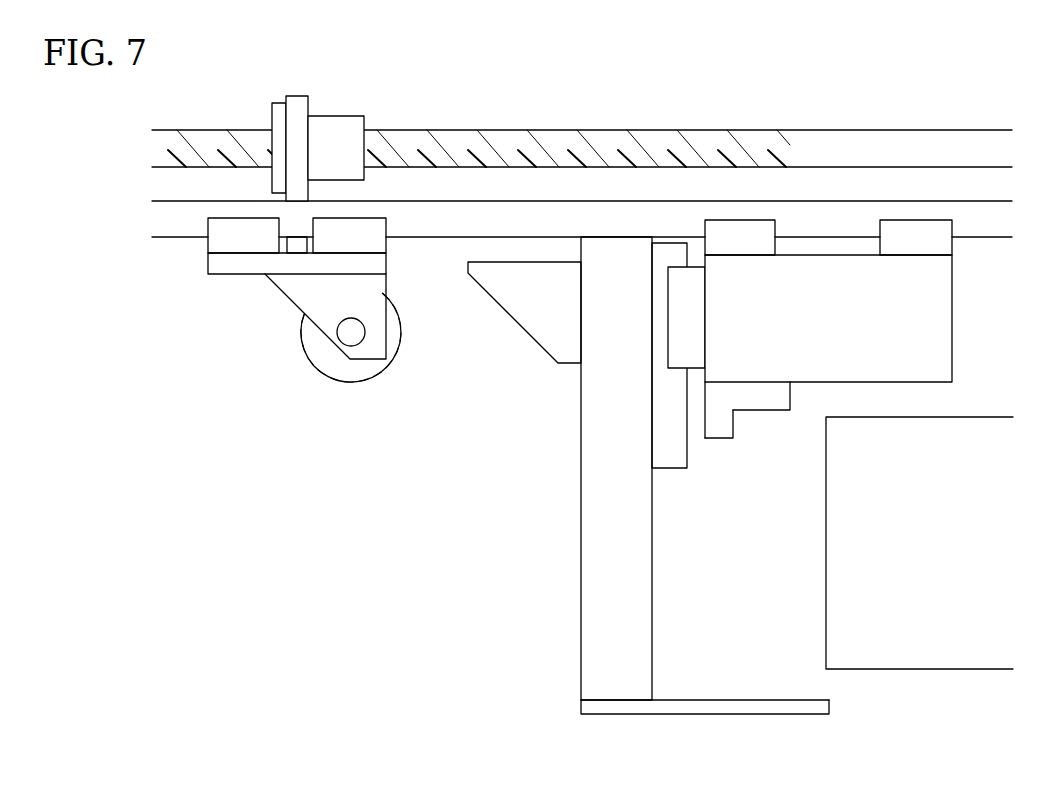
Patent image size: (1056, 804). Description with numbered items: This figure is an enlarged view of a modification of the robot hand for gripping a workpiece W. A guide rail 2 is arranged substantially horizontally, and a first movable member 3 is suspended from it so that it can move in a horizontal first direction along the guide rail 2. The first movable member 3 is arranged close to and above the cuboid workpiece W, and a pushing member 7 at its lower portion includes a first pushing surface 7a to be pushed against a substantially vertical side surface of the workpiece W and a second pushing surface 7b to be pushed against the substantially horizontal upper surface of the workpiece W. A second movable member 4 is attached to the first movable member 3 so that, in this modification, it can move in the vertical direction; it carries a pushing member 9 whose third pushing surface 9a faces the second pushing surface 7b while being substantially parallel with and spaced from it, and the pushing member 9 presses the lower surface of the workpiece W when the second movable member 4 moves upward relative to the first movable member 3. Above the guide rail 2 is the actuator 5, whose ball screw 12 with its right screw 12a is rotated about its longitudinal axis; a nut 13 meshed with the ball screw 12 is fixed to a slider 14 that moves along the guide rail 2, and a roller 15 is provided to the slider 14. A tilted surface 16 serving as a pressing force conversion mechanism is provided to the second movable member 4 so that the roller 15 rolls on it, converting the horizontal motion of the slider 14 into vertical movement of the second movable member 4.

The guide rail 2 is at (853, 201).
The first movable member 3 is at (970, 323).
The second movable member 4 is at (565, 597).
The actuator 5 is at (233, 371).
The pushing member 7 is at (704, 452).
The first pushing surface 7a is at (737, 416).
The second pushing surface 7b is at (768, 412).
The pushing member 9 is at (688, 732).
The third pushing surface 9a is at (755, 700).
The ball screw 12 is at (609, 113).
The right screw 12a is at (445, 130).
The nut 13 is at (325, 116).
The slider 14 is at (230, 276).
The roller 15 is at (308, 360).
The tilted surface 16 is at (522, 330).
The workpiece W is at (875, 669).